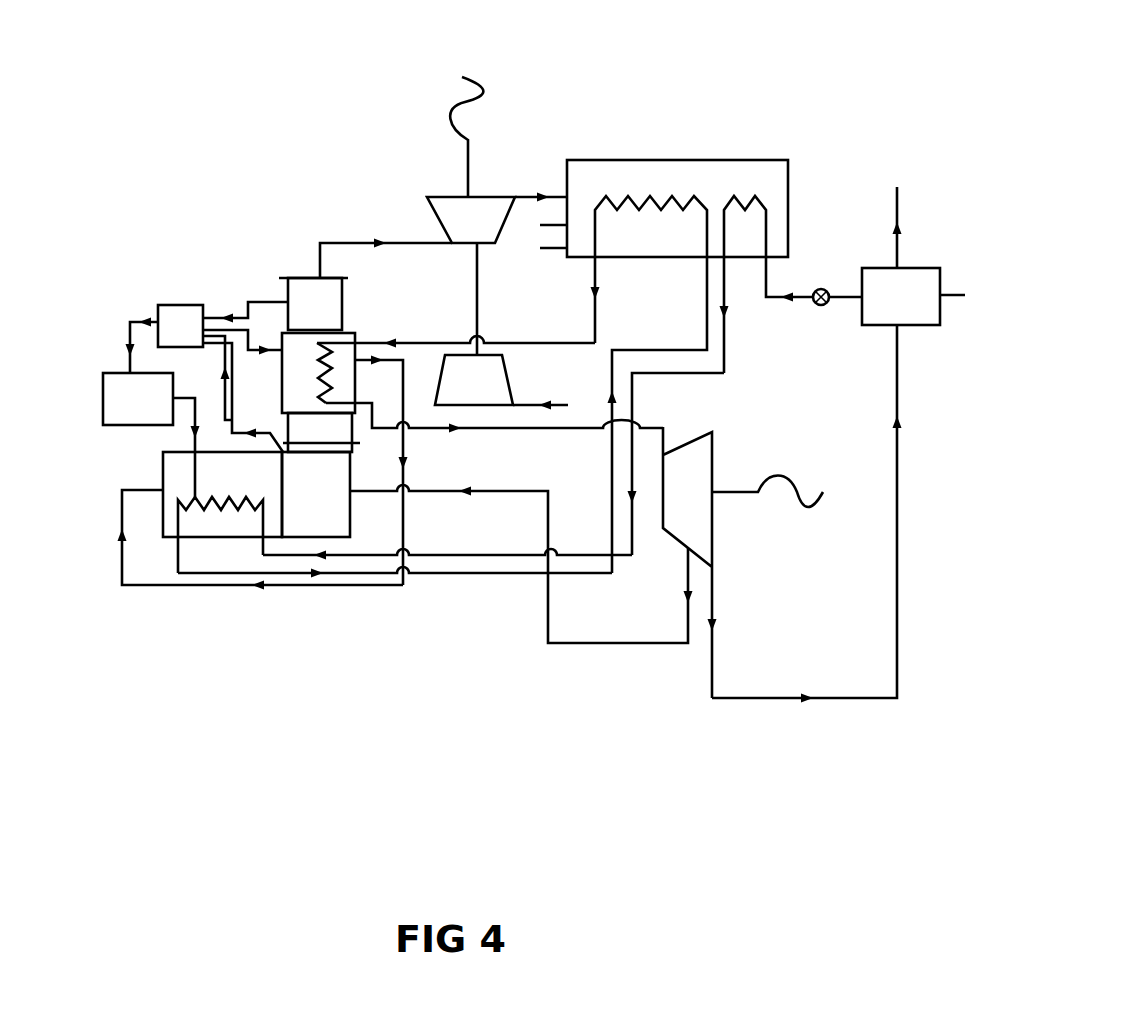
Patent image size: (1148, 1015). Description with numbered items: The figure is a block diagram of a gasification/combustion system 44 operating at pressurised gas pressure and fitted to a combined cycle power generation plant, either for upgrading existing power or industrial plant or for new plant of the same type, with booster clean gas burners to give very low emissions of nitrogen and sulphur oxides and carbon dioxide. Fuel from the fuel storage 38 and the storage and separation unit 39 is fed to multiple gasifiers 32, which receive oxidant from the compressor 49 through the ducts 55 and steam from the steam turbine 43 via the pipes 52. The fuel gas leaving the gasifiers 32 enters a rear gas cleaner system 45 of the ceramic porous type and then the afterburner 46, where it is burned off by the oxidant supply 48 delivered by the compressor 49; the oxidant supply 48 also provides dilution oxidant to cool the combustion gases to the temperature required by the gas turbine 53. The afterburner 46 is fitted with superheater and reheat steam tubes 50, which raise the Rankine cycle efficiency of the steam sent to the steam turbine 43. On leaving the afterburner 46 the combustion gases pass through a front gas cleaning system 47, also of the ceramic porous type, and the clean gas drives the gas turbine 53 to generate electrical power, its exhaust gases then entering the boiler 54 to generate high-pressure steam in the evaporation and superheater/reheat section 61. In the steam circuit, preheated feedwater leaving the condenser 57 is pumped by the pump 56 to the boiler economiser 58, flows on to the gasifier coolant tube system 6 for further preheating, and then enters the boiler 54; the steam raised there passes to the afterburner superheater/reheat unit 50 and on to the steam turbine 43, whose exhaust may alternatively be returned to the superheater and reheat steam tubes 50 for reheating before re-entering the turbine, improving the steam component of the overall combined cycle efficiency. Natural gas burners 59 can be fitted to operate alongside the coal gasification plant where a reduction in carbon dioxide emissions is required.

The gasification/combustion system 44 is at (525, 351).
The gas turbine 53 is at (442, 188).
The boiler 54 is at (597, 158).
The evaporation and superheater/reheat section 61 is at (667, 188).
The boiler economiser 58 is at (738, 187).
The natural gas burners 59 is at (537, 258).
The pump 56 is at (817, 282).
The condenser 57 is at (912, 265).
The steam turbine 43 is at (717, 443).
The compressor 49 is at (510, 378).
The afterburner 46 is at (449, 366).
The superheater and reheat steam tubes 50 is at (308, 377).
The oxidant supply 48 is at (382, 363).
The front gas cleaning system 47 is at (348, 297).
The storage and separation unit 39 is at (175, 302).
The fuel storage 38 is at (140, 433).
The rear gas cleaner system 45 is at (355, 432).
The gasifiers 32 is at (153, 527).
The gasifier coolant tube system 6 is at (215, 490).
The ducts 55 is at (305, 595).
The pipes 52 is at (482, 487).